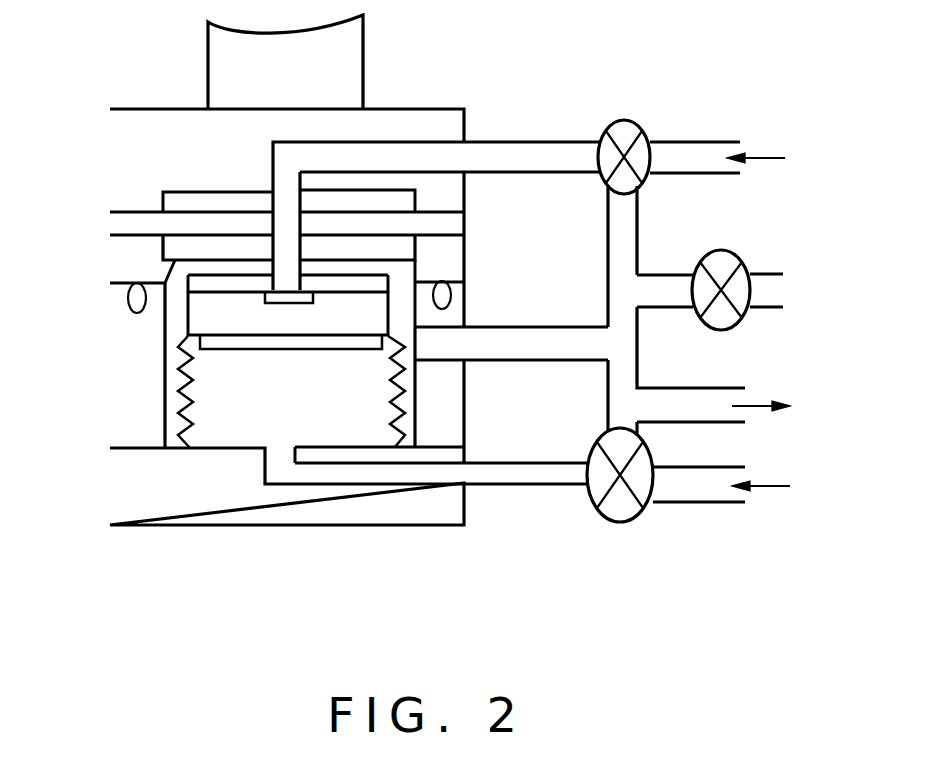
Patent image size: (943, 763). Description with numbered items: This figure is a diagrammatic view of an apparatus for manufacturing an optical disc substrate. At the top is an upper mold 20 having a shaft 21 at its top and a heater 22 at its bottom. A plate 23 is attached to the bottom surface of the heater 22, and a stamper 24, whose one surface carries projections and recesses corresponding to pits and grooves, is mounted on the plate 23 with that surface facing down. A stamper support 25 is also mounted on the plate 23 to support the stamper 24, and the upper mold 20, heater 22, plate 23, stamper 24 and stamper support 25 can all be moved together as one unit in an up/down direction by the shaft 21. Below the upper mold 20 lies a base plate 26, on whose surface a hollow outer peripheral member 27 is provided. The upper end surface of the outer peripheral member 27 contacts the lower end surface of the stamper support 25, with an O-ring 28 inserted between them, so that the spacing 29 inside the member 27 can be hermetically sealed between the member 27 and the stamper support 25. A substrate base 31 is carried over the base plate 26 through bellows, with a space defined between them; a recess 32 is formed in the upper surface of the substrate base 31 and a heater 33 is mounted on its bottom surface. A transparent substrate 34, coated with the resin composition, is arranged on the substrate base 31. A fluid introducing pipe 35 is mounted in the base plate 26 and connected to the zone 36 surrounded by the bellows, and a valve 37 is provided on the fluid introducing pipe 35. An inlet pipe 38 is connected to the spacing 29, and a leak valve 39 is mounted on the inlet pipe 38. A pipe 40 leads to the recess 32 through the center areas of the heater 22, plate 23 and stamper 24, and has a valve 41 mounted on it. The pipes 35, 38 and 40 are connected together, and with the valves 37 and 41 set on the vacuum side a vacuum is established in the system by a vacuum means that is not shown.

The upper mold 20 is at (117, 147).
The shaft 21 is at (360, 55).
The heater 22 is at (196, 198).
The plate 23 is at (455, 218).
The stamper 24 is at (163, 248).
The stamper support 25 is at (122, 270).
The base plate 26 is at (125, 483).
The outer peripheral member 27 is at (120, 426).
The O-ring 28 is at (128, 300).
The spacing 29 is at (178, 395).
The substrate base 31 is at (228, 338).
The recess 32 is at (286, 303).
The heater 33 is at (340, 343).
The transparent substrate 34 is at (383, 282).
The fluid introducing pipe 35 is at (525, 480).
The zone 36 is at (228, 437).
The valve 37 is at (638, 515).
The inlet pipe 38 is at (535, 350).
The leak valve 39 is at (730, 250).
The pipe 40 is at (530, 150).
The valve 41 is at (638, 125).